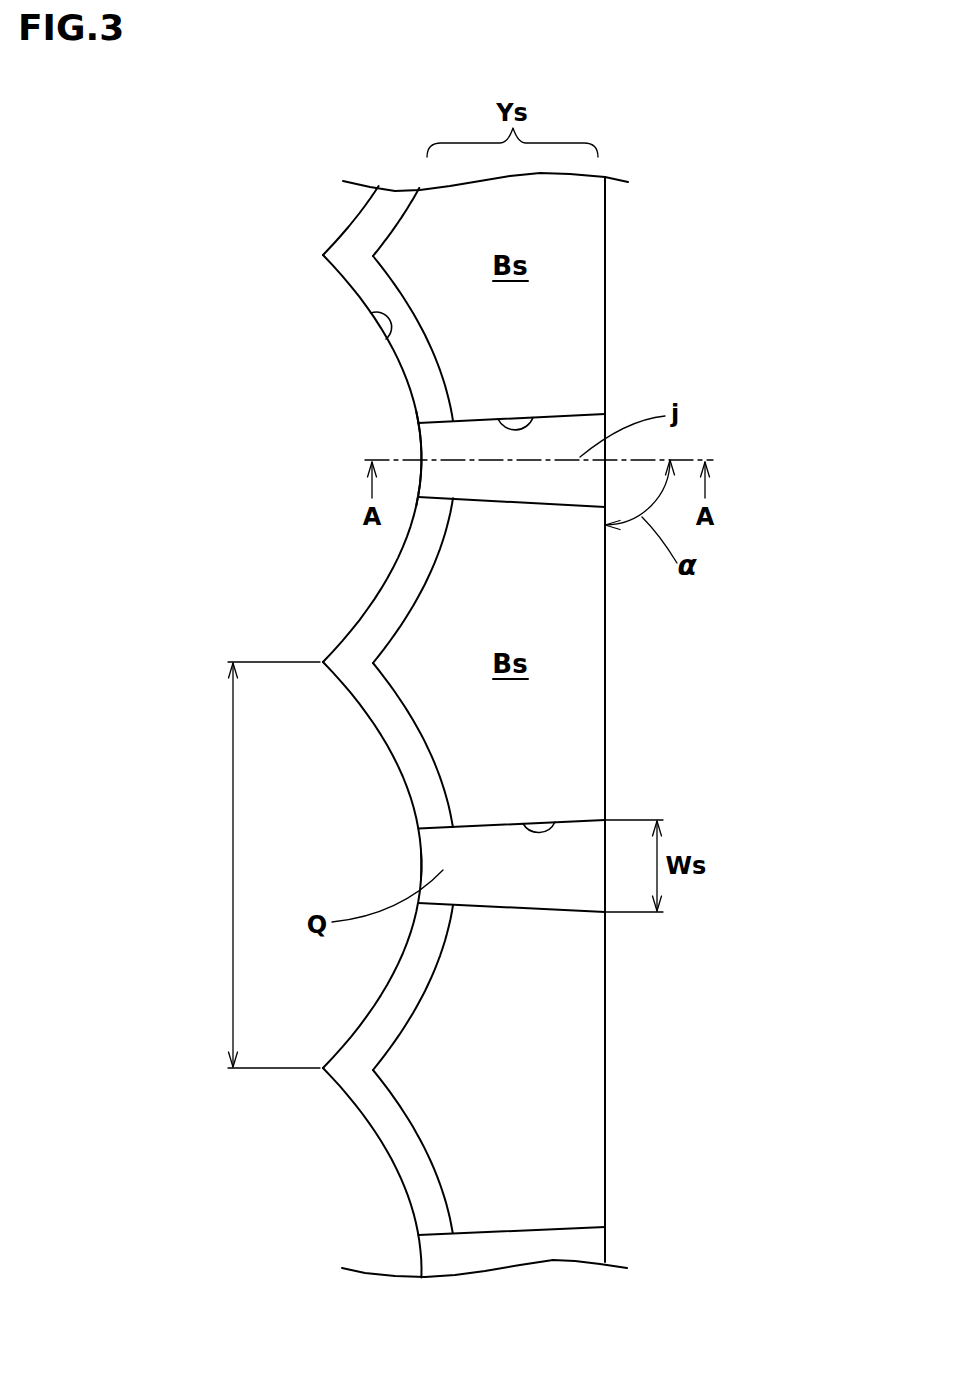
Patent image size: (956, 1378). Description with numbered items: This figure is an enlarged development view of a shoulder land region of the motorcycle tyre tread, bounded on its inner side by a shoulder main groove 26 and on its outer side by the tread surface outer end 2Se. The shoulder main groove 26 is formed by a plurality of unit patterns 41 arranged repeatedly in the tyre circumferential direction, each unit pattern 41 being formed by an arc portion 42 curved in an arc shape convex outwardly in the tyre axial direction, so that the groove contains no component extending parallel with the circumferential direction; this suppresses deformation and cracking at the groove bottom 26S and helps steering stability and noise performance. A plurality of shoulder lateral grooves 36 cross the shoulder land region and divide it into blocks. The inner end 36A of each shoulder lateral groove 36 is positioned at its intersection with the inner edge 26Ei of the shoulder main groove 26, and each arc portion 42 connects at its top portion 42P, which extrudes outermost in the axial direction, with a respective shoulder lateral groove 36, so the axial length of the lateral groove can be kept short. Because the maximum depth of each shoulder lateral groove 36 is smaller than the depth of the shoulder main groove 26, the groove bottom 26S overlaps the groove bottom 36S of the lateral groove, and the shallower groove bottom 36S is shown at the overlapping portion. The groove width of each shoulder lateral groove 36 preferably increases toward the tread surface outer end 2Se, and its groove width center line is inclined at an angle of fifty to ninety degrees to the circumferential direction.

The shoulder main groove 26 is at (344, 690).
The groove bottom of shoulder main groove 26S is at (365, 235).
The inner edge of shoulder main groove 26Ei is at (388, 330).
The shoulder lateral groove 36 is at (491, 762).
The groove bottom of shoulder lateral groove 36S is at (568, 437).
The inner end of shoulder lateral groove 36A is at (405, 443).
The arc portion 42 is at (395, 733).
The top portion of arc portion 42P is at (418, 866).
The unit pattern 41 is at (257, 865).
The tread surface outer end 2Se is at (606, 218).